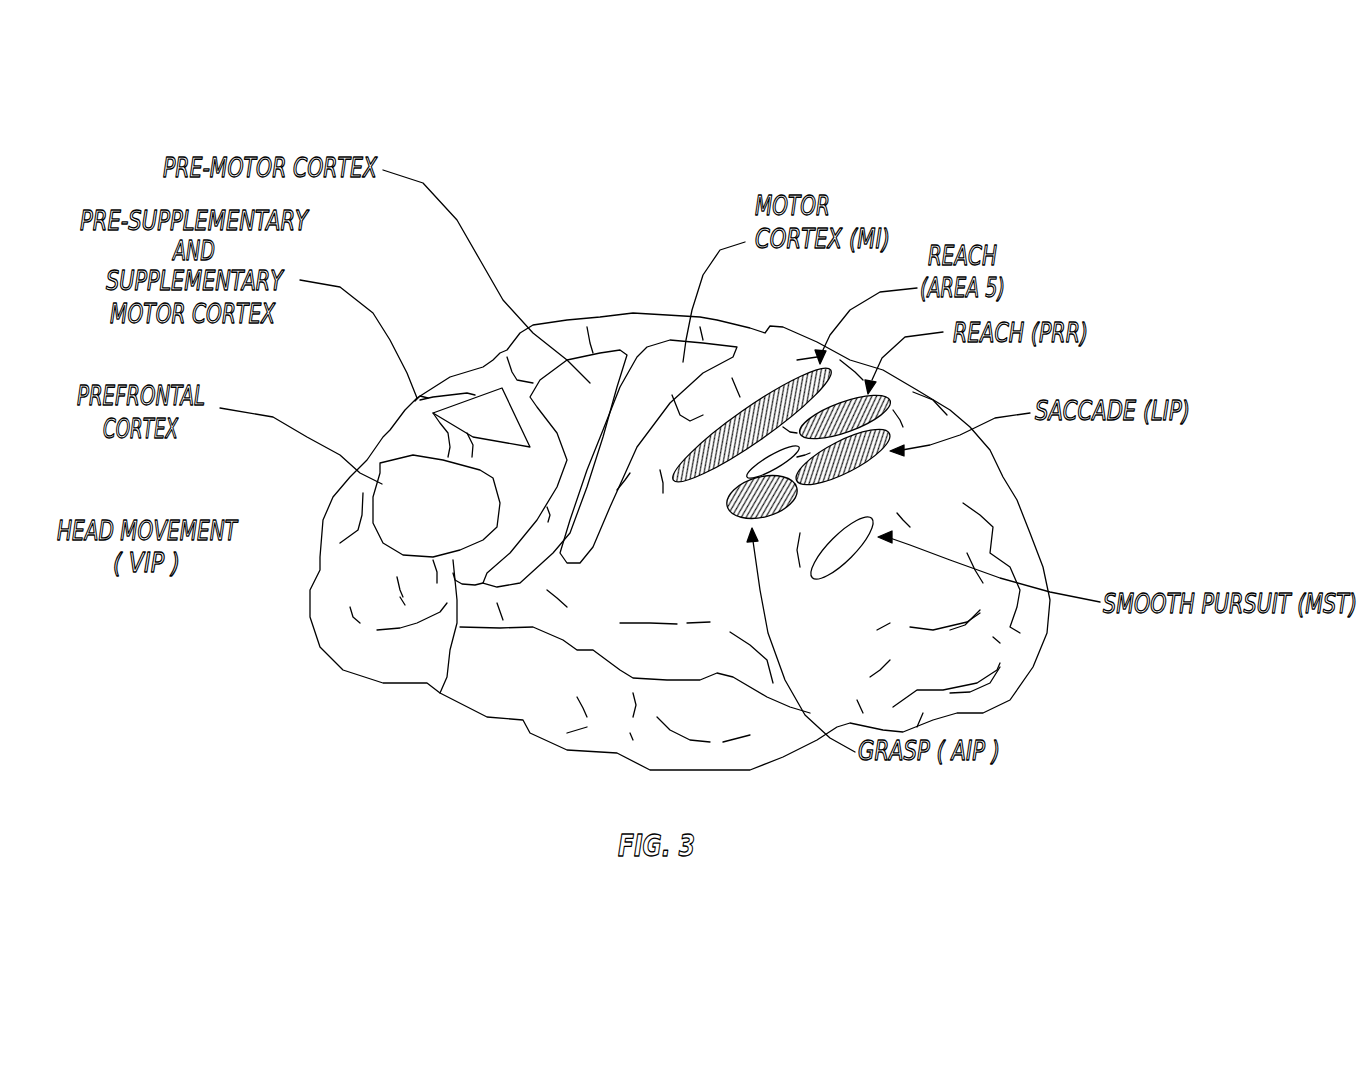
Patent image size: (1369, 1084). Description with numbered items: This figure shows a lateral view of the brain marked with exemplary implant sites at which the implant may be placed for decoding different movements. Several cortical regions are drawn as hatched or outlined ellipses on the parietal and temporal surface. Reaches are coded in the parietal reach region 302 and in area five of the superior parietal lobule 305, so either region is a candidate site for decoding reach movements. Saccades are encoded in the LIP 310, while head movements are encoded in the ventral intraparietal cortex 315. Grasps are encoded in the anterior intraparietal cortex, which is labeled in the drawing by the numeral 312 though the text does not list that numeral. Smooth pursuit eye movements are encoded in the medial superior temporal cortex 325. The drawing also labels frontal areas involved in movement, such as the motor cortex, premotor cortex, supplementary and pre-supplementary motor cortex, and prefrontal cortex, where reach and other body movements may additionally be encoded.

The parietal reach region (PRR) 302 is at (889, 398).
The area 5 of the superior parietal lobule 305 is at (777, 393).
The LIP 310 is at (850, 466).
The grasp region (AIP) 312 is at (733, 508).
The ventral intraparietal (VIP) cortex 315 is at (783, 466).
The medial superior temporal (MST) cortex 325 is at (855, 548).